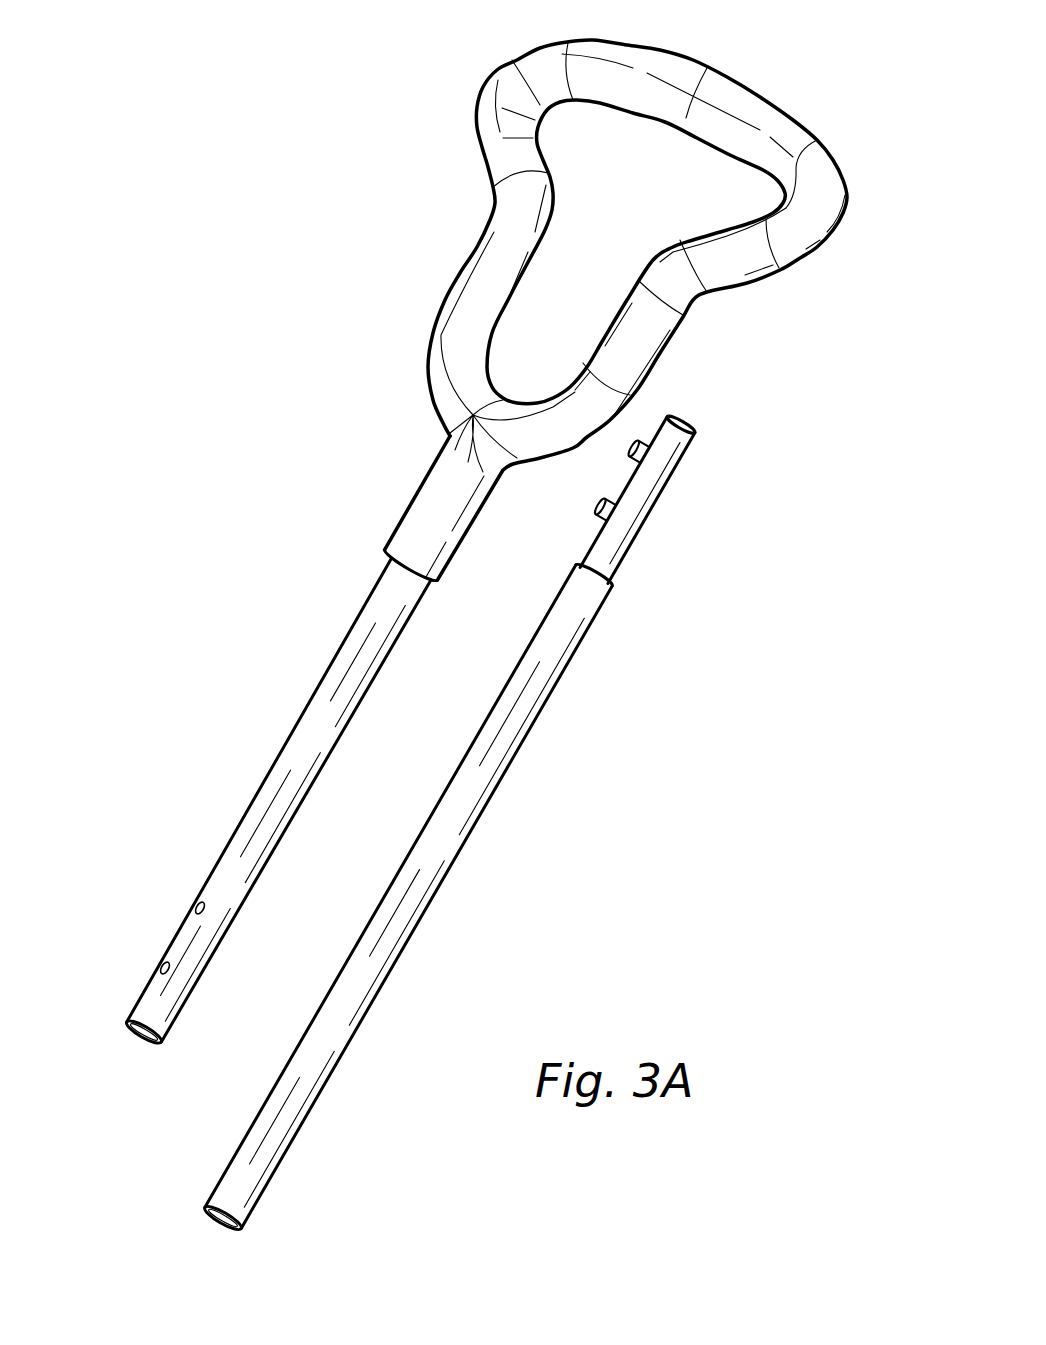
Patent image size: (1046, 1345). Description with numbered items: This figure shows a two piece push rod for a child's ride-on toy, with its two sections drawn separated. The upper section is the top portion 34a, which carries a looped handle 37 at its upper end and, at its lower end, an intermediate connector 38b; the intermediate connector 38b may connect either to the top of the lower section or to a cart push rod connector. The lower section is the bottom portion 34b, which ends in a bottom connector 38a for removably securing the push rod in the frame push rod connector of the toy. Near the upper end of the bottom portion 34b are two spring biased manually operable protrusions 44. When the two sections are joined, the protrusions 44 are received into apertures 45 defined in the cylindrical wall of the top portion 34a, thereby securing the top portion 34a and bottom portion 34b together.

The handle 37 is at (528, 95).
The top portion 34a is at (331, 690).
The bottom portion 34b is at (470, 805).
The bottom connector 38a is at (225, 1193).
The intermediate connector 38b is at (150, 1005).
The spring biased manually operable protrusions 44 is at (617, 513).
The apertures 45 is at (190, 910).